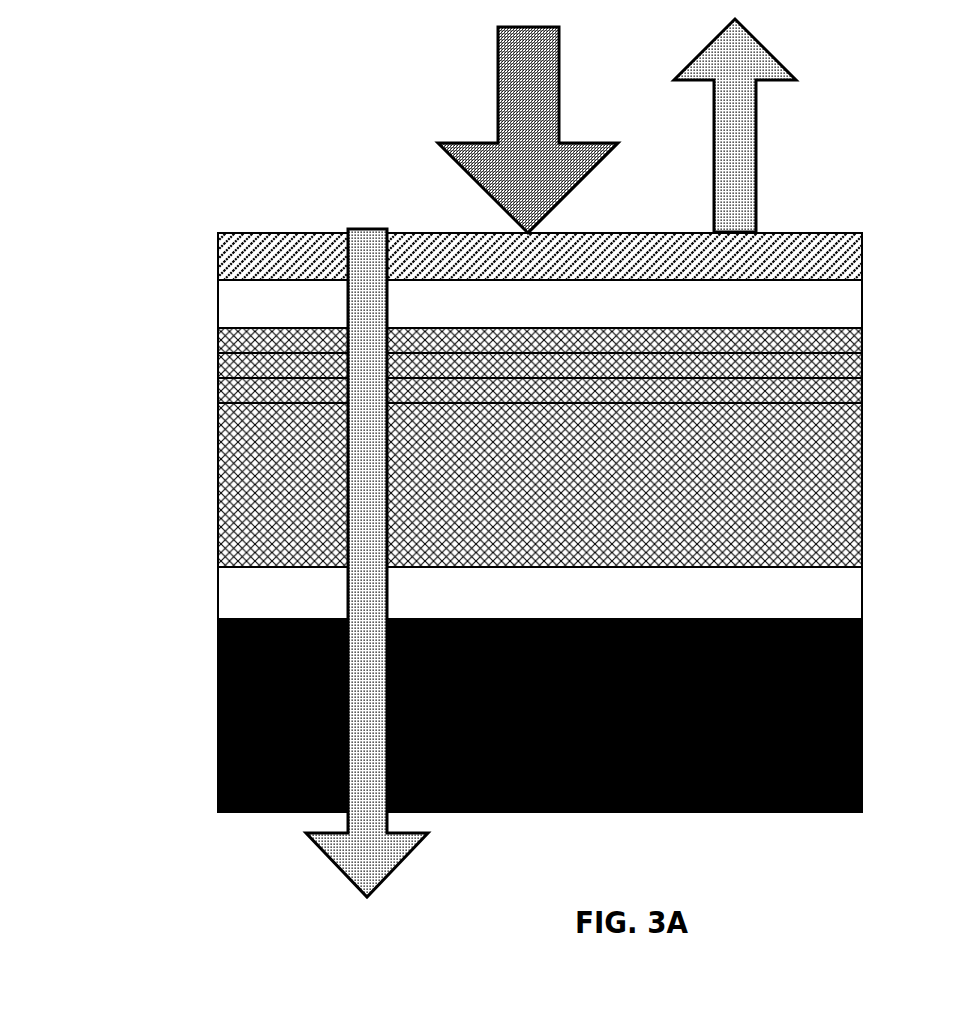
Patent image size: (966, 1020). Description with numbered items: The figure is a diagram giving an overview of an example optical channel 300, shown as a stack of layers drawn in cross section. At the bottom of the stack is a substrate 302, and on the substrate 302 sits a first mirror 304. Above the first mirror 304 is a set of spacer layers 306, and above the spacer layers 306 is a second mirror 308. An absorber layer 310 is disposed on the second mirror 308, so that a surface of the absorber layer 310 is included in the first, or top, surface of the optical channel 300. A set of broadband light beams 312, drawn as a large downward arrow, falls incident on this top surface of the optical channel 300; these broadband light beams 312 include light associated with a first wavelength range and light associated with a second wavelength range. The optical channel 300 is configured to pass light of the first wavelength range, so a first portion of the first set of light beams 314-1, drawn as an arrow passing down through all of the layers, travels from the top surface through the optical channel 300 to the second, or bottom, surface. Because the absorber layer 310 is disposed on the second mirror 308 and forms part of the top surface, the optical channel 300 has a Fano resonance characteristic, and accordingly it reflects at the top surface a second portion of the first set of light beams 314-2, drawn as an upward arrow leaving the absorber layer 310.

The optical channel 300 is at (148, 44).
The substrate 302 is at (214, 623).
The first mirror 304 is at (214, 569).
The set of spacer layers 306 is at (214, 330).
The second mirror 308 is at (214, 281).
The absorber layer 310 is at (203, 252).
The set of broadband light beams 312 is at (521, 78).
The first portion of the first set of light beams 314-1 is at (366, 248).
The second portion of the first set of light beams 314-2 is at (727, 97).